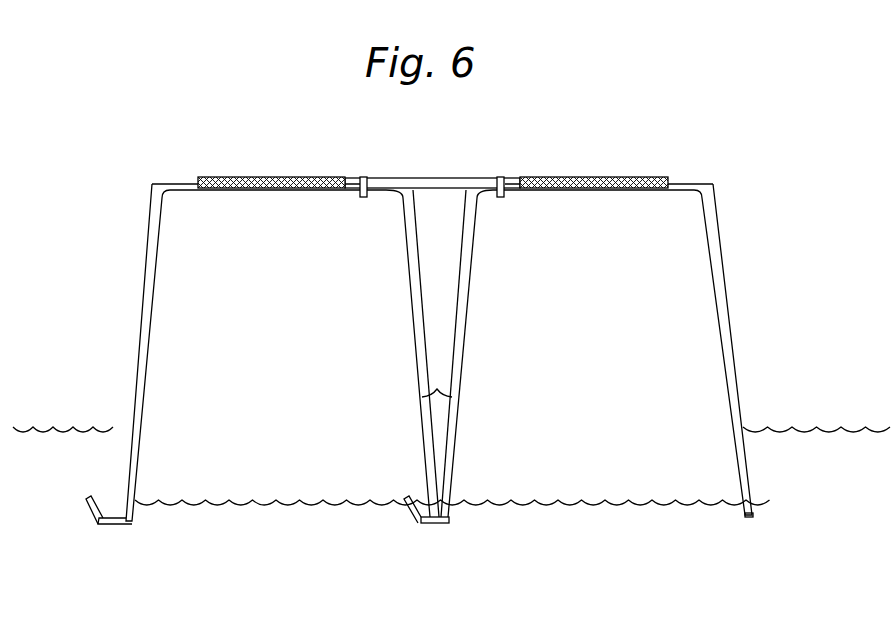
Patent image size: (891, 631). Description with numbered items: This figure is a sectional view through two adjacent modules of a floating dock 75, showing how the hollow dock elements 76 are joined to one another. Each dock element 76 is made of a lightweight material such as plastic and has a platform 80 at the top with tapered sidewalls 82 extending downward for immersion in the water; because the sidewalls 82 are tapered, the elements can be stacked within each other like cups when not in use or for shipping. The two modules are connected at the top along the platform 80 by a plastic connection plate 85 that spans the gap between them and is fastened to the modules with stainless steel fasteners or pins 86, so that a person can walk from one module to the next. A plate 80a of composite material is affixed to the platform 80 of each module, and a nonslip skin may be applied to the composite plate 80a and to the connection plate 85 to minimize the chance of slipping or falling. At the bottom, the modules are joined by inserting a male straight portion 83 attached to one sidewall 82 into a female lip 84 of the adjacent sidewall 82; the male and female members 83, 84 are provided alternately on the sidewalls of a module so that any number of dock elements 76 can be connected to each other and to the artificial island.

The floating dock 75 is at (727, 100).
The platform 80 is at (163, 183).
The plate of composite material 80a is at (248, 178).
The tapered sidewalls 82 is at (142, 424).
The hollow dock elements 76 is at (136, 373).
The connection plate 85 is at (446, 178).
The fasteners or pins 86 is at (364, 177).
The female lip 84 is at (117, 527).
The male straight portion 83 is at (410, 497).